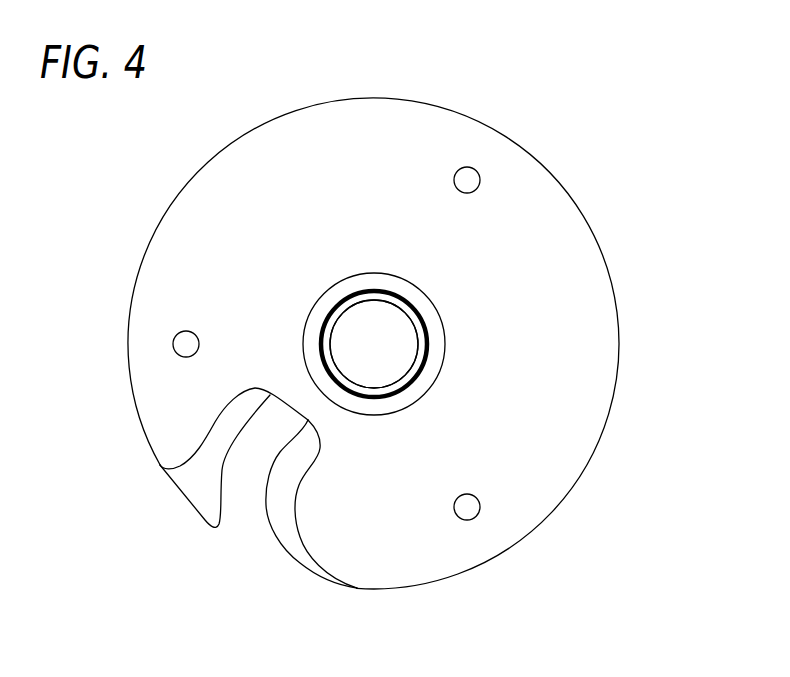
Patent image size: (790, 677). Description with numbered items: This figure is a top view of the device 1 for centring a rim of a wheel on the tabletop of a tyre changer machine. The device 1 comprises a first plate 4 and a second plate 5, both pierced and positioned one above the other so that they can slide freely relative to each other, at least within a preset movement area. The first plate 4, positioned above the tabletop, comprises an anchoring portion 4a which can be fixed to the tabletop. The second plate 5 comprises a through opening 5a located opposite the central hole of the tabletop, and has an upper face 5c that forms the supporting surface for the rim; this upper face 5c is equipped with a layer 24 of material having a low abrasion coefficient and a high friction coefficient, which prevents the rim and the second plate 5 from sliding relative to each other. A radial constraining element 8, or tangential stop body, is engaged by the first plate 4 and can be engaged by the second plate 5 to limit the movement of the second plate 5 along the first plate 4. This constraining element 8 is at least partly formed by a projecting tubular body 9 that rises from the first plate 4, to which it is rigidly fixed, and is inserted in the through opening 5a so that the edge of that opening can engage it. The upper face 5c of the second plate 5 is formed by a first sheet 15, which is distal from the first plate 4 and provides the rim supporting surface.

The device 1 is at (528, 137).
The first plate 4 is at (195, 492).
The anchoring portion 4a is at (396, 328).
The second plate 5 is at (281, 110).
The through opening 5a is at (426, 359).
The upper face 5c is at (378, 128).
The radial constraining element 8 is at (440, 342).
The projecting body 9 is at (415, 373).
The first sheet 15 is at (137, 280).
The layer 24 is at (547, 195).